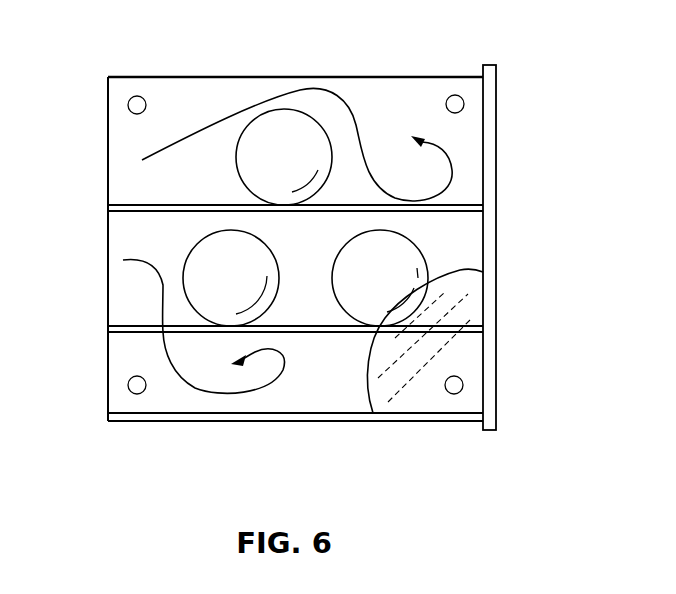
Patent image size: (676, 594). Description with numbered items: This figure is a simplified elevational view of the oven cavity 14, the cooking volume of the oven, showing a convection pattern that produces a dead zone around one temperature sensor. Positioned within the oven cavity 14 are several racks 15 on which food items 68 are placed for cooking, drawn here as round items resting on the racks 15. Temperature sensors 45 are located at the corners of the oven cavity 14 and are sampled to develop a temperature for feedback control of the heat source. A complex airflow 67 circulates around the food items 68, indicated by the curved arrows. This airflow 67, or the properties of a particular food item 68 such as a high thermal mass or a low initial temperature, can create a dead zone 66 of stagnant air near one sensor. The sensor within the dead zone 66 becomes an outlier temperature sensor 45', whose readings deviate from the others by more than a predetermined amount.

The oven cavity 14 is at (313, 403).
The racks 15 is at (123, 204).
The temperature sensor 45 is at (309, 227).
The outlier temperature sensor 45' is at (507, 367).
The dead zone 66 is at (462, 291).
The airflow 67 is at (262, 98).
The food items 68 is at (280, 130).